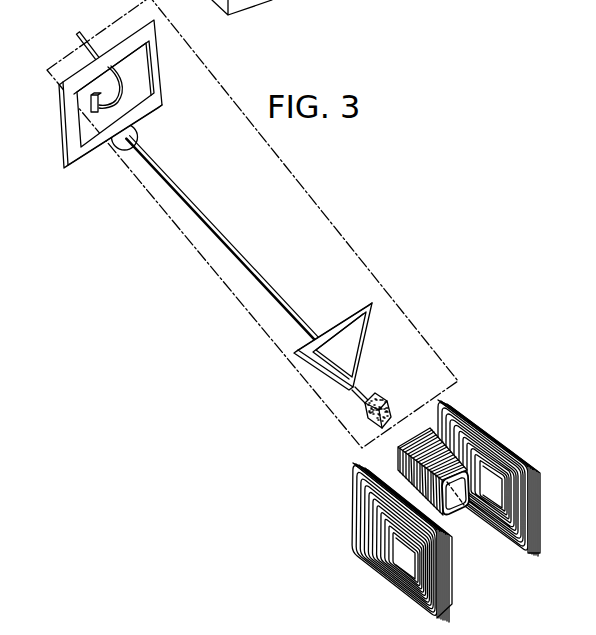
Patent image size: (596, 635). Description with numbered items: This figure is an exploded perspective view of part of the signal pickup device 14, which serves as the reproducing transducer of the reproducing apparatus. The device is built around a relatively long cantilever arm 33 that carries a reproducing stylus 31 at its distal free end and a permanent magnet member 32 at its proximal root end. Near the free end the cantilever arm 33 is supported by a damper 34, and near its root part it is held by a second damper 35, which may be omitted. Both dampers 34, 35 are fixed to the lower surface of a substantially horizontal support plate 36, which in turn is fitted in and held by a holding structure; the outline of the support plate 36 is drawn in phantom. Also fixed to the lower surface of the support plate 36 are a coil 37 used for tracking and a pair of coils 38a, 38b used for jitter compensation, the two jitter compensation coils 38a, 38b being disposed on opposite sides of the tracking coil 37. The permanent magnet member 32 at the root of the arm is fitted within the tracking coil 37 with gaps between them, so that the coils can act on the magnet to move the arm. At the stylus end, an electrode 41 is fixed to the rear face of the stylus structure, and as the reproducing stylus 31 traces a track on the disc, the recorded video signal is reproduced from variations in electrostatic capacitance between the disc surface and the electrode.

The signal pickup device 14 is at (326, 173).
The reproducing stylus 31 is at (91, 105).
The permanent magnet member 32 is at (361, 434).
The cantilever arm 33 is at (231, 240).
The damper 34 is at (158, 77).
The damper 35 is at (350, 313).
The support plate 36 is at (354, 246).
The tracking coil 37 is at (455, 503).
The jitter compensation coil 38a is at (362, 562).
The jitter compensation coil 38b is at (512, 447).
The electrode 41 is at (78, 38).